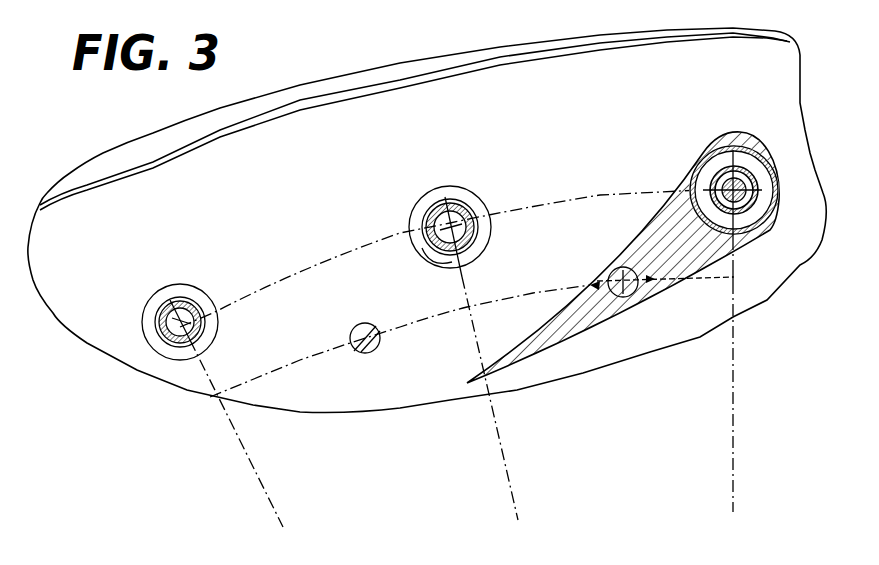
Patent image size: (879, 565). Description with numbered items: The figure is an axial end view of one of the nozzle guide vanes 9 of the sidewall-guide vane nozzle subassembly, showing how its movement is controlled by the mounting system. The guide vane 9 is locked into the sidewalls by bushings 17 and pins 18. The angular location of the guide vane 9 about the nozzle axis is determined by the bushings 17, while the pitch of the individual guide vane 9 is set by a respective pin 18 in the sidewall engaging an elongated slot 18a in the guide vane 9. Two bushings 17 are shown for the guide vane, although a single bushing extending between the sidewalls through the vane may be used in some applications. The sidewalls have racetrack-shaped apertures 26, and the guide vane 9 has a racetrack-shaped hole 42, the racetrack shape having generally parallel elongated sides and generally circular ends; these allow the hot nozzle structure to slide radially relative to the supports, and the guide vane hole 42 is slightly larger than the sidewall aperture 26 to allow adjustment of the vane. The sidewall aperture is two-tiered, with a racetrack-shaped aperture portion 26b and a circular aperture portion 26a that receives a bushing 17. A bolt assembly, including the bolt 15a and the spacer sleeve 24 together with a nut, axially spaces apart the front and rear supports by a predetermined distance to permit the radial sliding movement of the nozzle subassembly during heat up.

The nozzle guide vane 9 is at (645, 292).
The bolt 15a is at (712, 156).
The bushing 17 is at (723, 233).
The pin 18 is at (372, 357).
The elongated slot 18a is at (634, 256).
The spacer sleeve 24 is at (187, 347).
The racetrack-shaped aperture 26 is at (208, 287).
The circular aperture portion 26a is at (216, 328).
The racetrack-shaped aperture portion 26b is at (433, 248).
The racetrack-shaped hole 42 is at (758, 228).